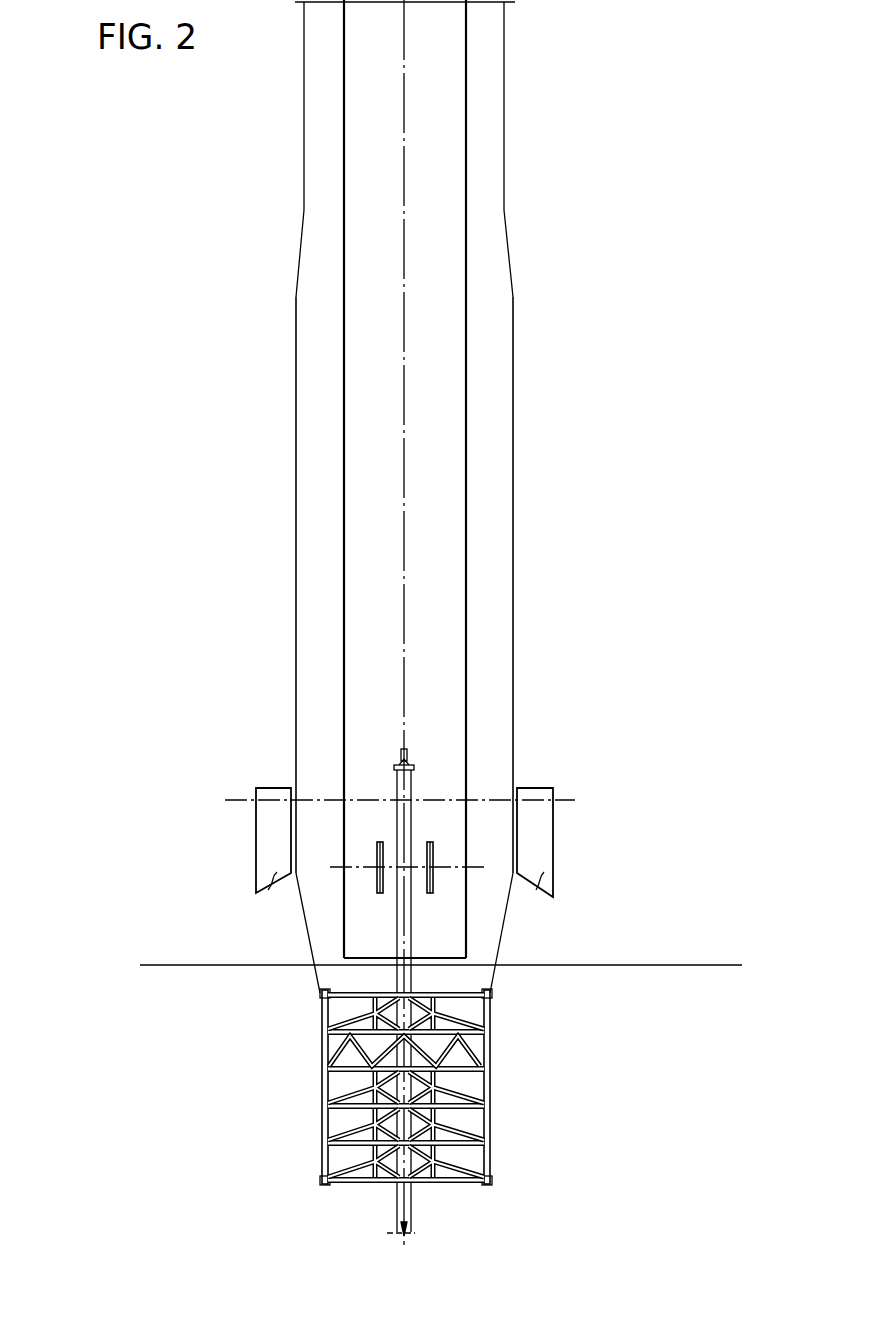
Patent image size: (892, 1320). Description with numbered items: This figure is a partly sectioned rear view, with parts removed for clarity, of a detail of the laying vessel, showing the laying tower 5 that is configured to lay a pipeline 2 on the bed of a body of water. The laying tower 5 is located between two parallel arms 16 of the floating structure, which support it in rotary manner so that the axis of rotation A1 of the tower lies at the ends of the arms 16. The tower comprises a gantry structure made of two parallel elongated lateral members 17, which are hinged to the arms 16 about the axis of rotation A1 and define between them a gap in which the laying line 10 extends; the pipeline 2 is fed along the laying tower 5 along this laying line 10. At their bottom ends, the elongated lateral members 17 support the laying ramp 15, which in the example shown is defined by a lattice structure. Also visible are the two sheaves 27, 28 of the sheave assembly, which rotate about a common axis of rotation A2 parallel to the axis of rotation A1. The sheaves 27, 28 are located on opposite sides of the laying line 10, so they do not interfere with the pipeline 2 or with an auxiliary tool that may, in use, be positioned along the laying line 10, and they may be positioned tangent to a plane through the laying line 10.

The pipeline 2 is at (412, 1214).
The laying tower 5 is at (548, 147).
The laying line 10 is at (404, 215).
The laying ramp 15 is at (443, 1106).
The arms 16 is at (264, 788).
The elongated lateral members 17 is at (314, 397).
The sheave 27 is at (375, 848).
The sheave 28 is at (430, 845).
The axis of rotation A1 is at (605, 794).
The axis of rotation A2 is at (472, 869).